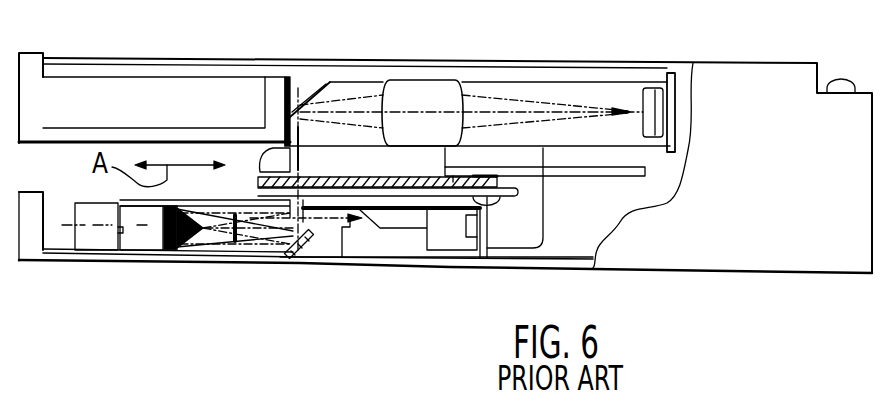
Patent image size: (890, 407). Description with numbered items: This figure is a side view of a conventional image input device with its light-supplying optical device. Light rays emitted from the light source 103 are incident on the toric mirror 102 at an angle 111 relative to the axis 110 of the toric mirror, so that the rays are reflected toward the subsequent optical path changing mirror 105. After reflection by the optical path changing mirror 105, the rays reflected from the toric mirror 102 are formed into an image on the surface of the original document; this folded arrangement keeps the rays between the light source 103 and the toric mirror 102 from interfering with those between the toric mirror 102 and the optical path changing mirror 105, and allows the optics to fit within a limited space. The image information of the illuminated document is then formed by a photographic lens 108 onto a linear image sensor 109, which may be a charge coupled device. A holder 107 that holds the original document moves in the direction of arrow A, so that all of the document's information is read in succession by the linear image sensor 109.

The toric mirror 102 is at (153, 247).
The light source 103 is at (390, 243).
The optical path changing mirror 105 is at (303, 258).
The holder 107 is at (338, 163).
The photographic lens 108 is at (423, 97).
The linear image sensor 109 is at (657, 74).
The axis of the toric mirror 110 is at (90, 226).
The angle 111 is at (235, 225).